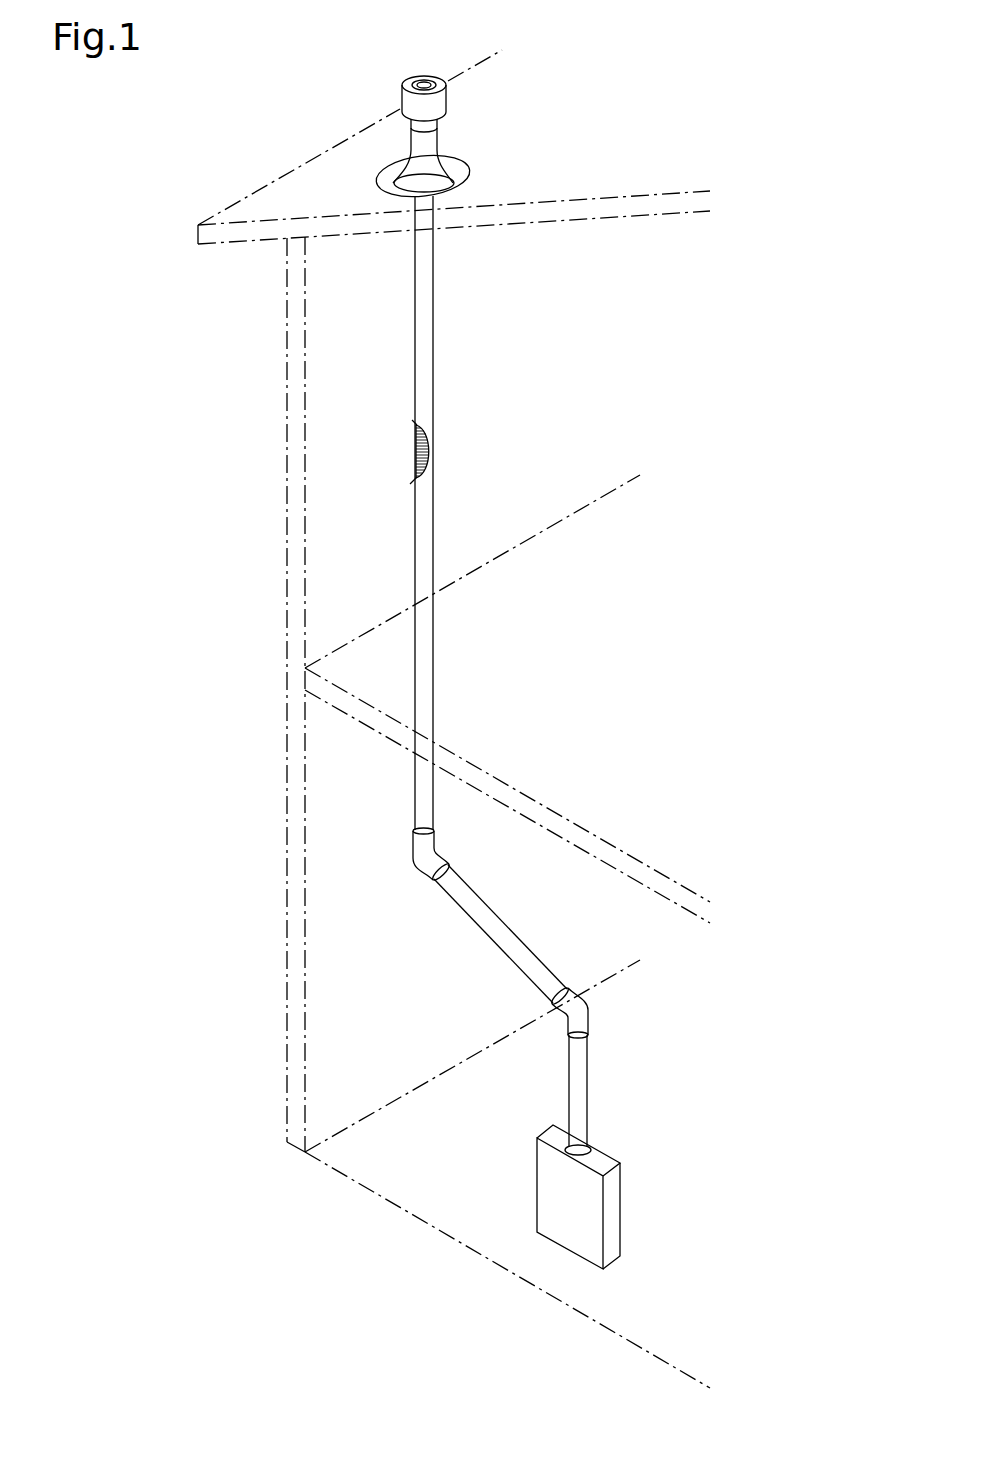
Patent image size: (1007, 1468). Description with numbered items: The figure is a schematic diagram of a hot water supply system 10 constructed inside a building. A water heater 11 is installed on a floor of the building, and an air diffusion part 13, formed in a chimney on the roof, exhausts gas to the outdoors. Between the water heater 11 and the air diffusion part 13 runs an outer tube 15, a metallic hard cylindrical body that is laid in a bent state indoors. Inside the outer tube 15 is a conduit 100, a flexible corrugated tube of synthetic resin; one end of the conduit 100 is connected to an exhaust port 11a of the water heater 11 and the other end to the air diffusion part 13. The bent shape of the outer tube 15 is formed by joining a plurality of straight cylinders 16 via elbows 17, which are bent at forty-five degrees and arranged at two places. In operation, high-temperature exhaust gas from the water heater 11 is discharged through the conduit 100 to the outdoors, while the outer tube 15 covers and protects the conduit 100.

The hot water supply system 10 is at (741, 1260).
The water heater 11 is at (623, 1185).
The exhaust port 11a is at (591, 1153).
The air diffusion part 13 is at (443, 148).
The outer tube 15 is at (435, 508).
The straight cylinder 16 is at (431, 685).
The elbow 17 is at (413, 848).
The conduit 100 is at (417, 448).